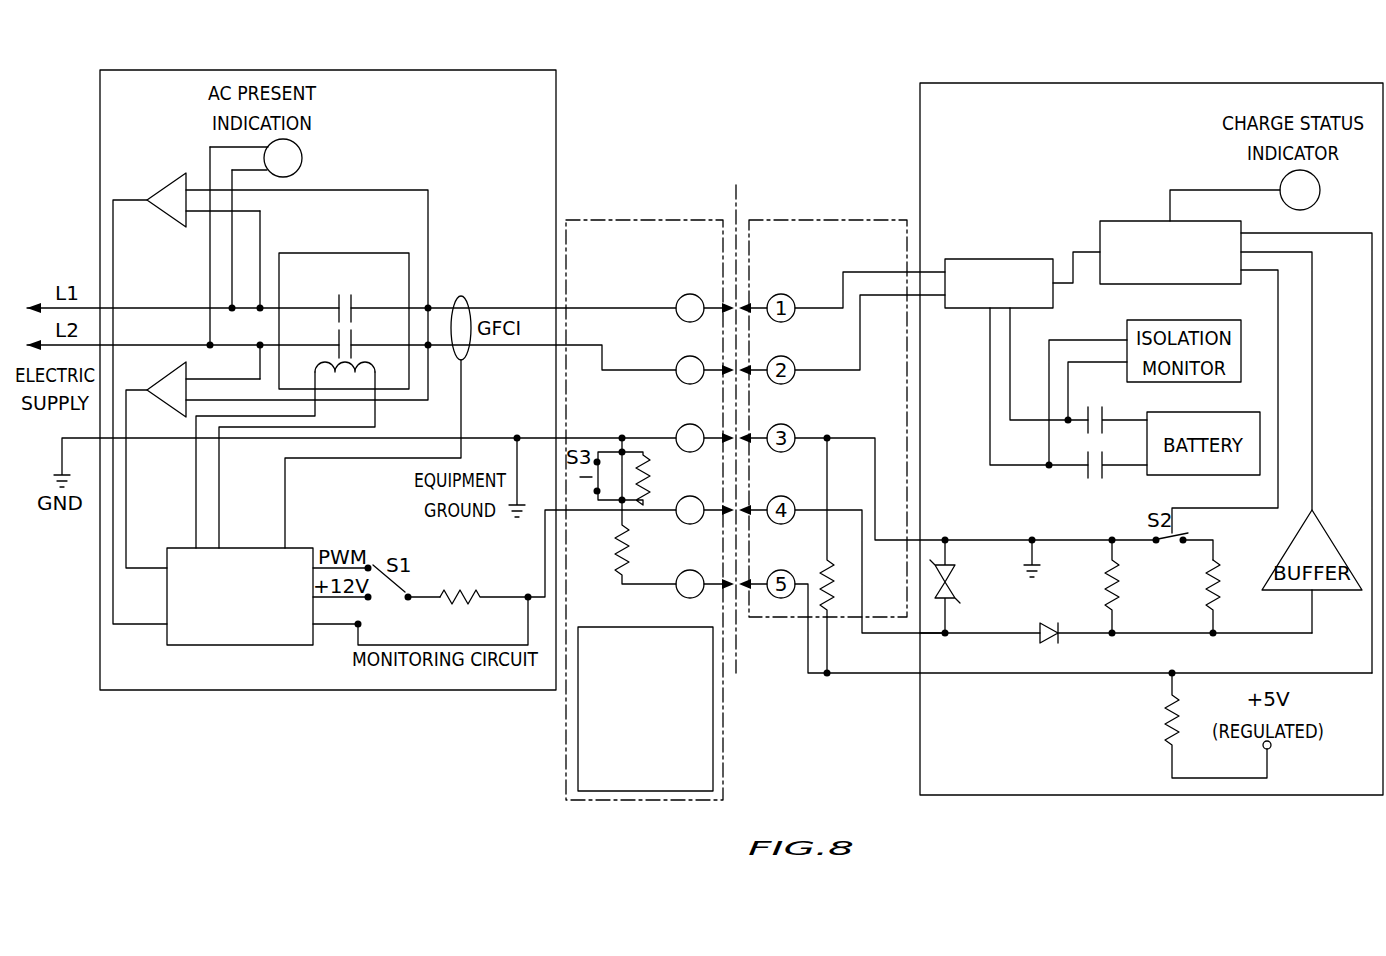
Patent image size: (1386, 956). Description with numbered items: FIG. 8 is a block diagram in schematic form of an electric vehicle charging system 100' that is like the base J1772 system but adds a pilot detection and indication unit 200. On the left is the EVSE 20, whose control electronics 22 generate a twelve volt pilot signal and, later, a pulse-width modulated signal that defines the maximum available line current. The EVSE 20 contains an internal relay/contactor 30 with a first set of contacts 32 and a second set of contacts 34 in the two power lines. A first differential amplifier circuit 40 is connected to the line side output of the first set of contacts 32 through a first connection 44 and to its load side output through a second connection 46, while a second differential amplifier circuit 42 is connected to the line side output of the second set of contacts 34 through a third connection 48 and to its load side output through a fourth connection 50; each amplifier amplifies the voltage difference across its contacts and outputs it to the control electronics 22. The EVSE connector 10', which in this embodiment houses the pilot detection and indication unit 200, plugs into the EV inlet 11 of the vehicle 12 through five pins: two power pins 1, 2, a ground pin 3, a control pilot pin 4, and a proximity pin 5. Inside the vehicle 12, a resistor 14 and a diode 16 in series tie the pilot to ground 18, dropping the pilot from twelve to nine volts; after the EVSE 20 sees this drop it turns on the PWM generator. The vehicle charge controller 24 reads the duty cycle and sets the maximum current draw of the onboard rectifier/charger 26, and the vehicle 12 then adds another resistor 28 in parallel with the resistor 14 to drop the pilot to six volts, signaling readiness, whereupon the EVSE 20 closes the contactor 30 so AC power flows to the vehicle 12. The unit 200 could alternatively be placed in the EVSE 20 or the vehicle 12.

The electric vehicle charging system 100' is at (102, 38).
The EVSE 20 is at (185, 70).
The first differential amplifier circuit 40 is at (168, 185).
The second differential amplifier circuit 42 is at (168, 378).
The first connection 44 is at (260, 311).
The third connection 48 is at (260, 348).
The relay/contactor 30 is at (350, 253).
The first set of contacts 32 is at (337, 312).
The second set of contacts 34 is at (353, 336).
The second connection 46 is at (428, 305).
The fourth connection 50 is at (428, 348).
The control electronics 22 is at (233, 548).
The EVSE connector 10' is at (644, 486).
The EV inlet 11 is at (806, 220).
The vehicle 12 is at (1020, 83).
The vehicle charge controller 24 is at (1124, 221).
The onboard vehicle rectifier/charger 26 is at (978, 259).
The ground 18 is at (1024, 566).
The resistor 14 is at (1105, 580).
The resistor 28 is at (1206, 580).
The diode 16 is at (1038, 641).
The pilot detection and indication unit 200 is at (622, 627).
The Line 1 power pin 1 is at (692, 322).
The Line 2 power pin 2 is at (692, 384).
The ground pin 3 is at (692, 452).
The control pilot pin 4 is at (692, 524).
The proximity pin 5 is at (680, 596).